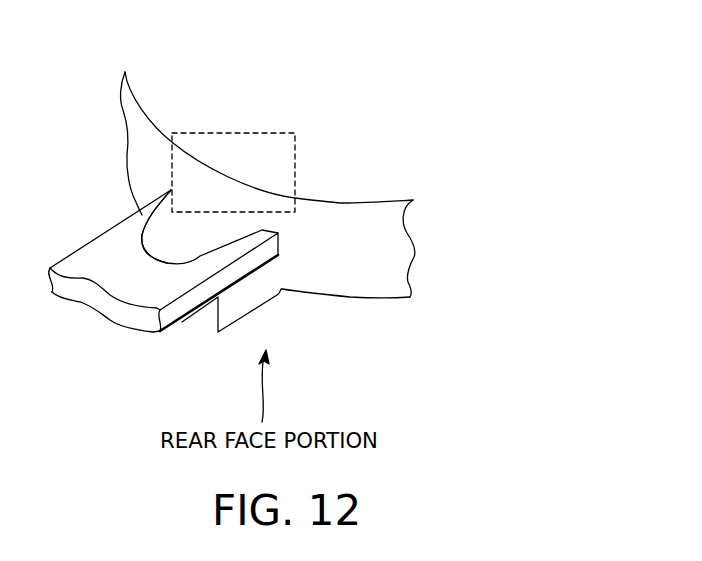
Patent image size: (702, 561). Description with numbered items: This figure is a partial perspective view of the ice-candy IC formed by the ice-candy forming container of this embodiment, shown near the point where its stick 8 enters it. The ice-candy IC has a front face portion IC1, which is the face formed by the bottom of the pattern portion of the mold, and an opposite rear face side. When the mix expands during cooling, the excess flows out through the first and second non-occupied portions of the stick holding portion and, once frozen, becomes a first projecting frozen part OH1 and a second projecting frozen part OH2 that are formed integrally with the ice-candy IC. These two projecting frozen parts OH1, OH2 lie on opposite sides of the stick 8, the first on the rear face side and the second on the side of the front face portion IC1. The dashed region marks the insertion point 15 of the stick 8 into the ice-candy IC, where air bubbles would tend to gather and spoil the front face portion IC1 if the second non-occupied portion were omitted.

The stick 8 is at (63, 255).
The insertion point 15 is at (295, 167).
The ice-candy IC is at (395, 260).
The front face portion IC1 is at (235, 110).
The first projecting frozen part OH1 is at (256, 309).
The second projecting frozen part OH2 is at (155, 233).